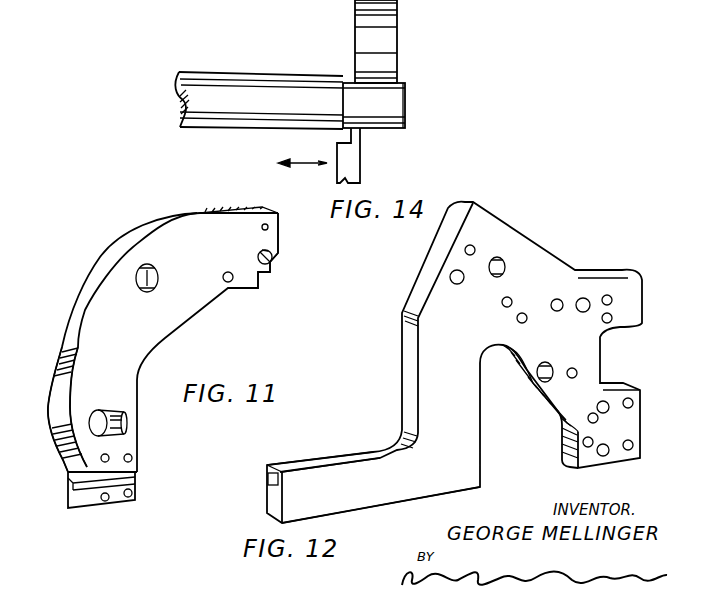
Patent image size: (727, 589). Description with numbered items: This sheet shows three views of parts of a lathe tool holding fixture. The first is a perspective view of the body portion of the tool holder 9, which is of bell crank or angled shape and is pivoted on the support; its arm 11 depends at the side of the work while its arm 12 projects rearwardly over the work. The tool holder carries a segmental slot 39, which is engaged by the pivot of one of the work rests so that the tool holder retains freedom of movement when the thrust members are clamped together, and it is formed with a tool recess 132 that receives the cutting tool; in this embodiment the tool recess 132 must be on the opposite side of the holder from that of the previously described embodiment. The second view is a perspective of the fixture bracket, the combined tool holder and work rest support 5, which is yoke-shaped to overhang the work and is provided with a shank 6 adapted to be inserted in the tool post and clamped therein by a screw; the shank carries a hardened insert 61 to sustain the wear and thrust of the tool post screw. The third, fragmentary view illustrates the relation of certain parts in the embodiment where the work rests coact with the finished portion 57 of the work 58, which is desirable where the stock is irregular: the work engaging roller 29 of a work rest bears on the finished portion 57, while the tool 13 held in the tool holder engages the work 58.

In FIG. 12, the combined tool holder and work rest support 5 is at (428, 342).
In FIG. 12, the shank 6 is at (352, 470).
In FIG. 12, the hardened insert 61 is at (312, 458).
In FIG. 11, the tool holder 9 is at (148, 335).
In FIG. 11, the arm 11 is at (88, 452).
In FIG. 11, the arm 12 is at (267, 237).
In FIG. 14, the tool 13 is at (352, 153).
In FIG. 14, the work engaging roller 29 is at (387, 50).
In FIG. 11, the segmental slot 39 is at (120, 432).
In FIG. 14, the finished portion of the work 57 is at (393, 105).
In FIG. 14, the work 58 is at (278, 77).
In FIG. 11, the tool recess 132 is at (97, 493).